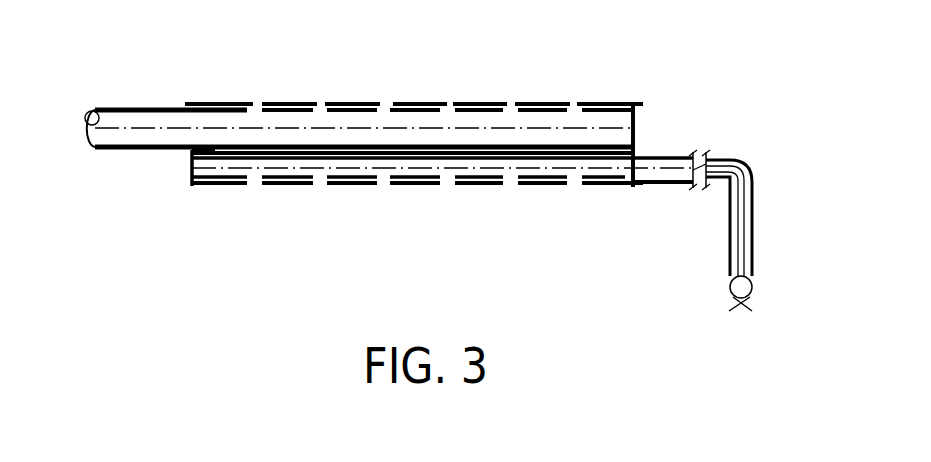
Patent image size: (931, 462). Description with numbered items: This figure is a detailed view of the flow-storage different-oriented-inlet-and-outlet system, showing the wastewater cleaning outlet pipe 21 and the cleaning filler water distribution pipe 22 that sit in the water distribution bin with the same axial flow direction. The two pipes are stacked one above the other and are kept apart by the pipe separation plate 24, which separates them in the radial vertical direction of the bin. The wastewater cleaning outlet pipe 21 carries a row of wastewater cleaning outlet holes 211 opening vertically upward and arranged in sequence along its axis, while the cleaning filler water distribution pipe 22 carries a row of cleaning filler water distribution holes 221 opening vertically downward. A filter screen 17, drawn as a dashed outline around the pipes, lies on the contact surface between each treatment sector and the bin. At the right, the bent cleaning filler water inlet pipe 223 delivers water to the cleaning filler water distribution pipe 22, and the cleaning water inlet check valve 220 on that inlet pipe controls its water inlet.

The filter screen 17 is at (575, 103).
The wastewater cleaning outlet pipe 21 is at (118, 107).
The wastewater cleaning outlet holes 211 is at (387, 103).
The cleaning filler water distribution pipe 22 is at (307, 186).
The cleaning filler water distribution holes 221 is at (385, 178).
The pipe separation plate 24 is at (195, 183).
The cleaning water inlet check valve 220 is at (708, 157).
The cleaning filler water inlet pipe 223 is at (753, 190).